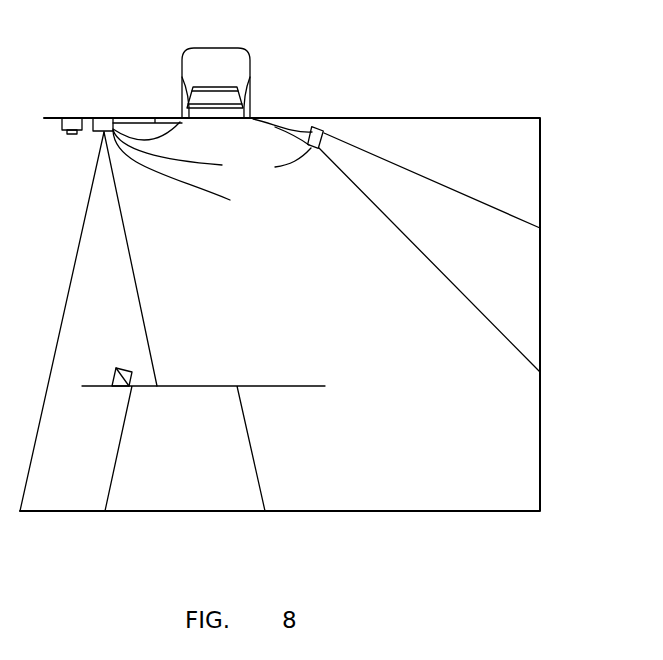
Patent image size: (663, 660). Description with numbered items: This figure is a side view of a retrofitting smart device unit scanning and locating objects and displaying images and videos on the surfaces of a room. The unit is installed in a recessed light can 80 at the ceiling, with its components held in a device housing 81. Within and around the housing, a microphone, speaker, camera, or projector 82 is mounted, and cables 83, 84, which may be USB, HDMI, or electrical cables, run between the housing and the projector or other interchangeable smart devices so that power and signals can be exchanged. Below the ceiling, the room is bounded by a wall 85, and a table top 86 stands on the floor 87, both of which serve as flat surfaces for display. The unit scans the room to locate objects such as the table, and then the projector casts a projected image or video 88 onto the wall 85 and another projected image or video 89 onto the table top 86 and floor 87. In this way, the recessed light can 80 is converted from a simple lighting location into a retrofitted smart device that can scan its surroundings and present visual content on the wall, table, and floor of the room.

The recessed light can 80 is at (235, 58).
The device housing 81 is at (227, 100).
The microphone, speaker, camera, or projector 82 is at (275, 167).
The cable 83 is at (276, 127).
The cable 84 is at (113, 127).
The wall 85 is at (540, 286).
The table top 86 is at (183, 386).
The floor 87 is at (63, 495).
The projected image or video 88 is at (475, 223).
The projected image or video 89 is at (125, 287).